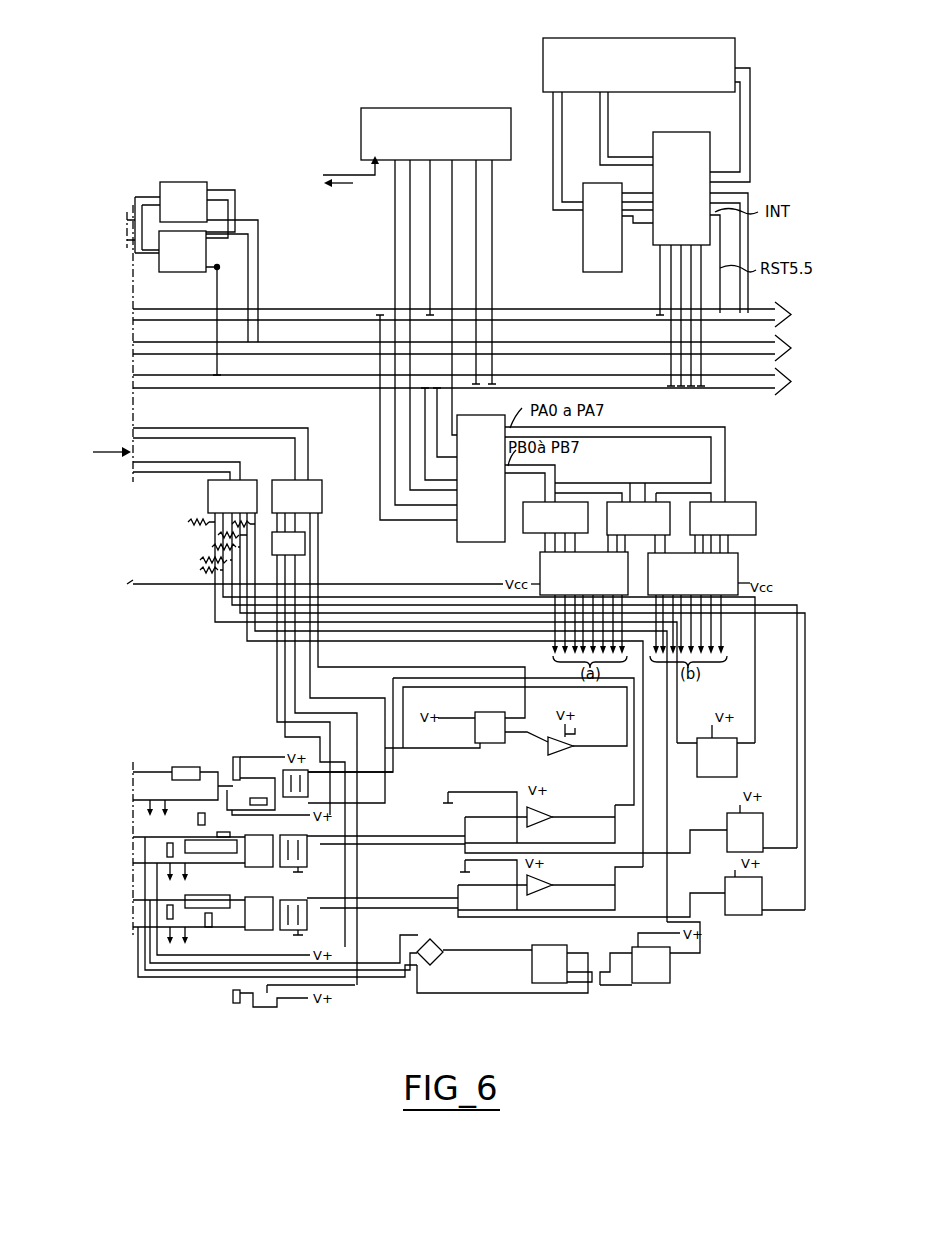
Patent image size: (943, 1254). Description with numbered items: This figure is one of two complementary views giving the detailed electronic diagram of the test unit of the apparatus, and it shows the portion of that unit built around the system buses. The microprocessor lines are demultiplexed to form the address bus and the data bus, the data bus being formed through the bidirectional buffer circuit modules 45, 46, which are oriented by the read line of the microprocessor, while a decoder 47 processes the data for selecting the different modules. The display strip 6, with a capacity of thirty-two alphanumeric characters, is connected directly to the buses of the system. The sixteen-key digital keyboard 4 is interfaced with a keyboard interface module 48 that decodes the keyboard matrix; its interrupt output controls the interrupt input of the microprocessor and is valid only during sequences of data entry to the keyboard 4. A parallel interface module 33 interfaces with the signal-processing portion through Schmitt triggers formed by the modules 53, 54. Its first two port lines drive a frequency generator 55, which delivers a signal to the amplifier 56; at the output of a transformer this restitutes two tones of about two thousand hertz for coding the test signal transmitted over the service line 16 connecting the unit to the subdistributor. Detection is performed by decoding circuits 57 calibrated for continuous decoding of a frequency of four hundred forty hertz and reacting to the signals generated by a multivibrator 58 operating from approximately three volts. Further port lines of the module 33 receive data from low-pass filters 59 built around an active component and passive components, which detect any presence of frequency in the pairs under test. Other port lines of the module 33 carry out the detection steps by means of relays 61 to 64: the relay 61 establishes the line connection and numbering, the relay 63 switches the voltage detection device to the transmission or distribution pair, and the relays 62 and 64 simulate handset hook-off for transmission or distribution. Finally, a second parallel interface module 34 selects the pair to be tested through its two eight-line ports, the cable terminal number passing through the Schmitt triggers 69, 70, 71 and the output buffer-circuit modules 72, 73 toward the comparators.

The digital keyboard 4 is at (668, 50).
The display strip 6 is at (445, 115).
The service line 16 is at (133, 770).
The type-8255 A module 33 is at (110, 467).
The second module of type 8255 A 34 is at (470, 543).
The bidirectional buffer circuit module 45 is at (183, 185).
The bidirectional buffer circuit module 46 is at (183, 256).
The decoder 47 is at (352, 186).
The Intel 8279 module 48 is at (688, 152).
The Schmitt trigger module 53 is at (220, 494).
The Schmitt trigger module 54 is at (318, 490).
The frequency generator 55 is at (492, 723).
The amplifier 56 is at (560, 750).
The detection circuit 57 is at (725, 757).
The multivibrator 58 is at (550, 962).
The low-pass filter 59 is at (548, 809).
The relay 61 is at (236, 755).
The relay 62 is at (196, 818).
The relay 63 is at (230, 994).
The relay 64 is at (209, 912).
The Schmitt trigger 69 is at (582, 512).
The Schmitt trigger 70 is at (640, 510).
The Schmitt trigger 71 is at (742, 502).
The output buffer-circuit module 72 is at (556, 568).
The output buffer-circuit module 73 is at (725, 567).